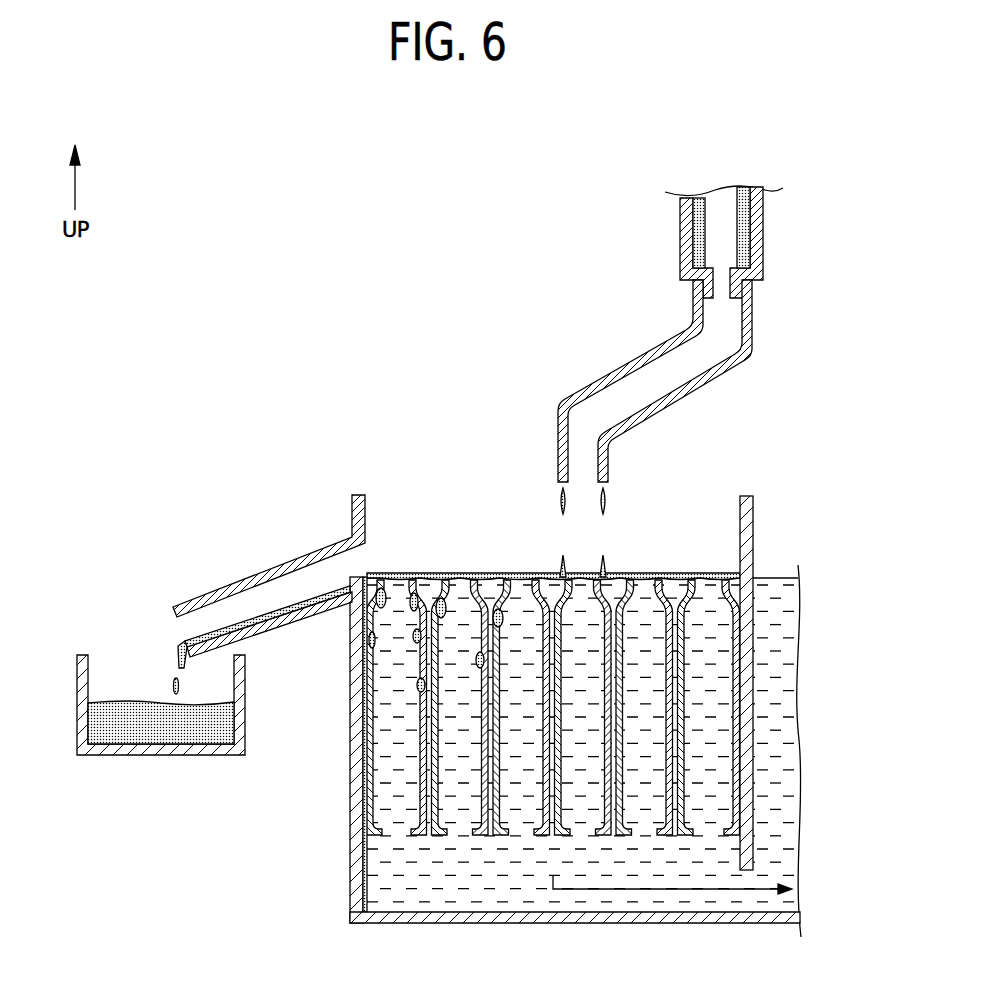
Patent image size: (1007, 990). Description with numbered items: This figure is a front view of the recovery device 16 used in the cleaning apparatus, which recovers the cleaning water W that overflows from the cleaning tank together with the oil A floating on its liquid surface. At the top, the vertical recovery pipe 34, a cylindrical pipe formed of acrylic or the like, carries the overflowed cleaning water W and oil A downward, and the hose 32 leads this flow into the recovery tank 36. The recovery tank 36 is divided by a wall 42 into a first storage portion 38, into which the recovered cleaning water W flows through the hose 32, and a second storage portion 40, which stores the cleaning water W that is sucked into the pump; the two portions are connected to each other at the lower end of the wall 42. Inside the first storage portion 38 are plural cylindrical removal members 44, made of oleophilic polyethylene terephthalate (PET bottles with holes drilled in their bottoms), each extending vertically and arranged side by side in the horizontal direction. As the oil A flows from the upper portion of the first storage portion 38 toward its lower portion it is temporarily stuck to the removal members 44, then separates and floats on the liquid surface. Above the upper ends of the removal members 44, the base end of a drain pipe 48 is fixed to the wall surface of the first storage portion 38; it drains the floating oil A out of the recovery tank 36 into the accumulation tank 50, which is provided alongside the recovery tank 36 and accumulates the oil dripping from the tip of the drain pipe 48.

The recovery device 16 is at (211, 264).
The hose 32 is at (619, 372).
The recovery pipe 34 is at (765, 220).
The recovery tank 36 is at (350, 842).
The first storage portion 38 is at (626, 898).
The second storage portion 40 is at (793, 705).
The wall 42 is at (753, 523).
The removal members 44 is at (436, 837).
The drain pipe 48 is at (243, 578).
The accumulation tank 50 is at (75, 722).
The oil A is at (468, 572).
The cleaning water W is at (456, 898).